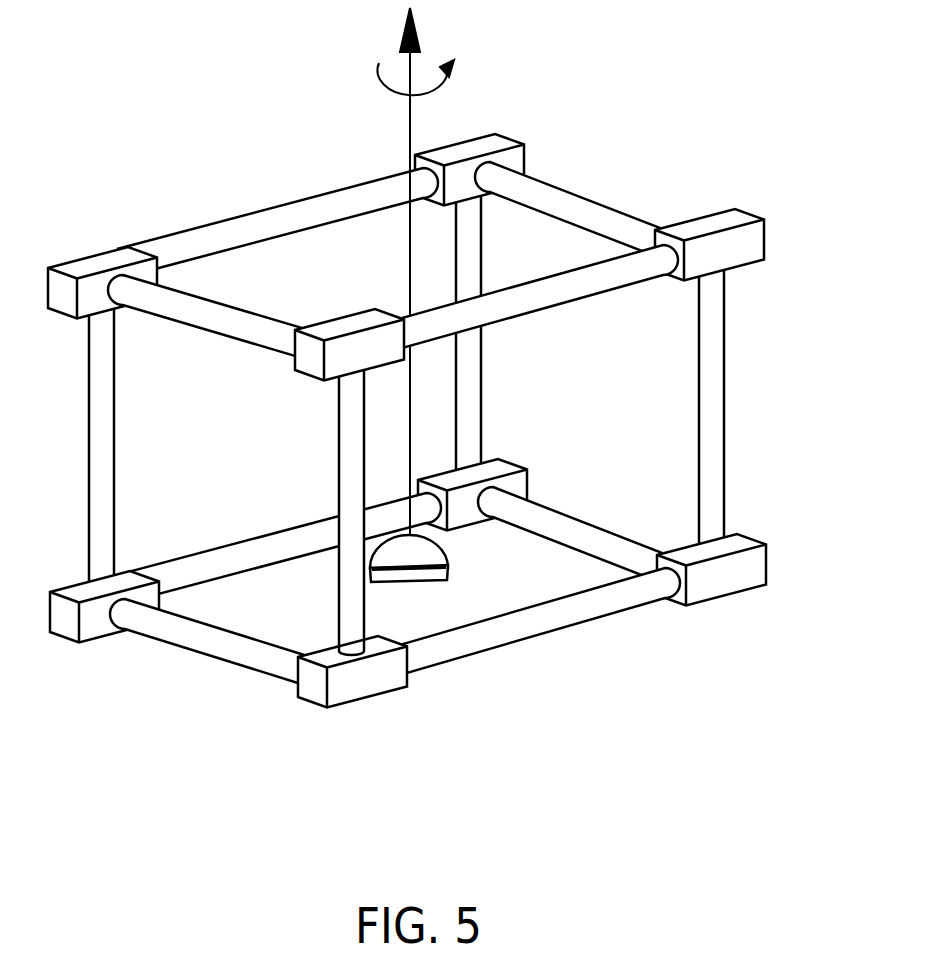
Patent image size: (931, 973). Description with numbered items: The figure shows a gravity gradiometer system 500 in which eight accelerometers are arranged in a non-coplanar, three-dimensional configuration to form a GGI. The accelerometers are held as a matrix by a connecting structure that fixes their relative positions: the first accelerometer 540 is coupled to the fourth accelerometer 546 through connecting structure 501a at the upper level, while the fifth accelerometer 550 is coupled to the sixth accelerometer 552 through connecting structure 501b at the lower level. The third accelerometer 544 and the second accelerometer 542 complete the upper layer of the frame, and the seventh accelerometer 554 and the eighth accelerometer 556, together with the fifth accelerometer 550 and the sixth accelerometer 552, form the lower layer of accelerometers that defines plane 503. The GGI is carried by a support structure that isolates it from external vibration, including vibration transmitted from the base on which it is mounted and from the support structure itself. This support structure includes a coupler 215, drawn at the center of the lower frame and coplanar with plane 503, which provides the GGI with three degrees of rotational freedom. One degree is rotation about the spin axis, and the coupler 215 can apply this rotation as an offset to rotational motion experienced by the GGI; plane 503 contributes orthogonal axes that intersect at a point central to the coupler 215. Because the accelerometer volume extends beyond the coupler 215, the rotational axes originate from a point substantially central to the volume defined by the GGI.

The gravity gradiometer system 500 is at (422, 371).
The accelerometer A4 546 is at (526, 147).
The connecting structure 501a is at (612, 196).
The accelerometer A1 540 is at (766, 240).
The accelerometer A8 556 is at (526, 471).
The plane 503 is at (537, 552).
The accelerometer A3 544 is at (62, 268).
The accelerometer A2 542 is at (352, 313).
The accelerometer A7 554 is at (53, 592).
The accelerometer A5 550 is at (768, 565).
The connecting structure 501b is at (570, 628).
The accelerometer A6 552 is at (343, 703).
The coupler 215 is at (433, 558).